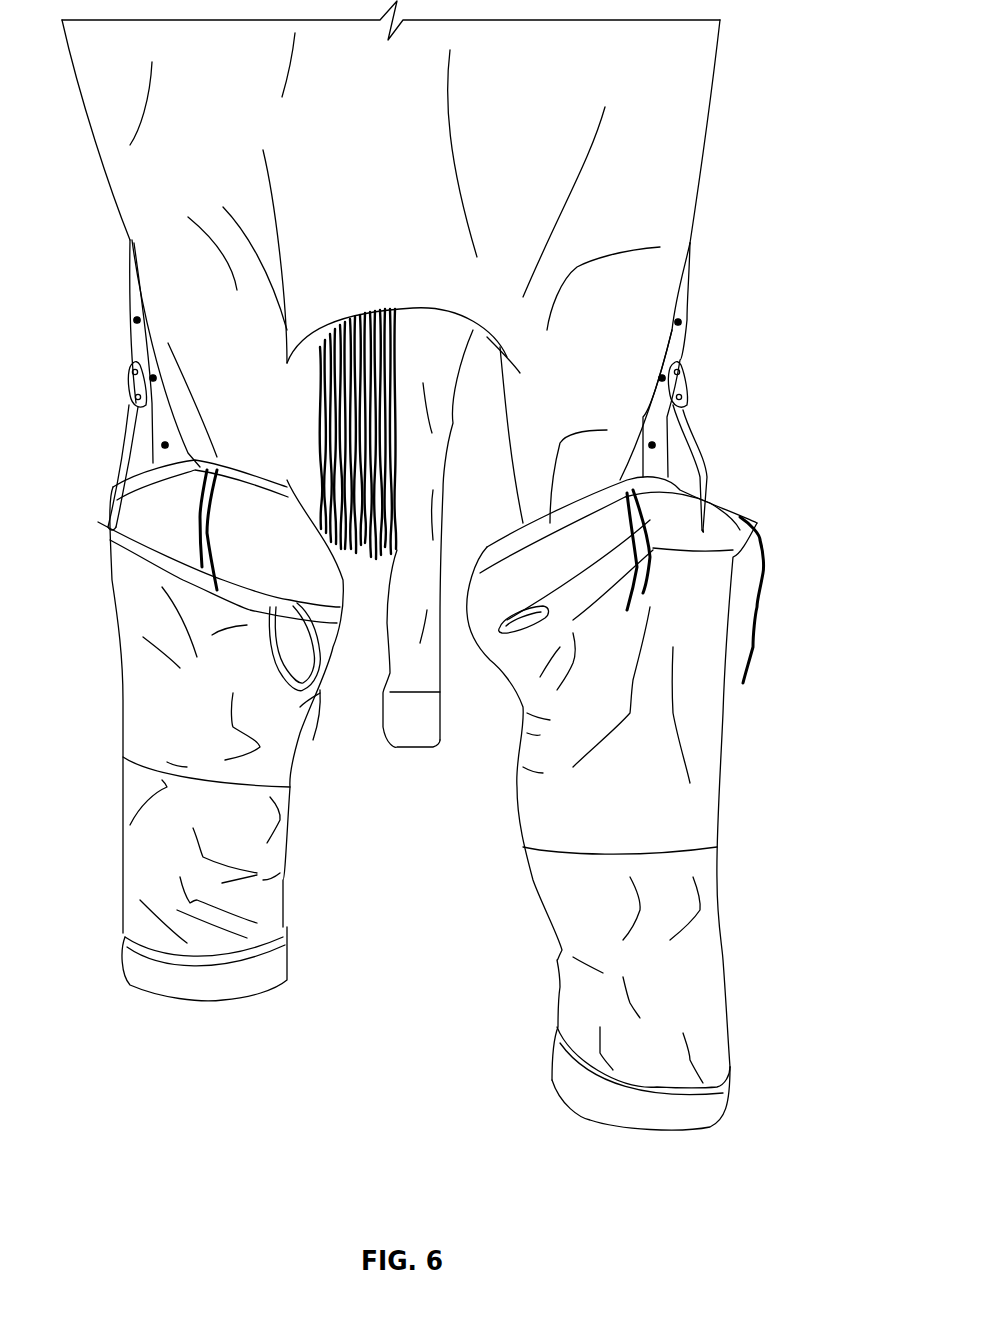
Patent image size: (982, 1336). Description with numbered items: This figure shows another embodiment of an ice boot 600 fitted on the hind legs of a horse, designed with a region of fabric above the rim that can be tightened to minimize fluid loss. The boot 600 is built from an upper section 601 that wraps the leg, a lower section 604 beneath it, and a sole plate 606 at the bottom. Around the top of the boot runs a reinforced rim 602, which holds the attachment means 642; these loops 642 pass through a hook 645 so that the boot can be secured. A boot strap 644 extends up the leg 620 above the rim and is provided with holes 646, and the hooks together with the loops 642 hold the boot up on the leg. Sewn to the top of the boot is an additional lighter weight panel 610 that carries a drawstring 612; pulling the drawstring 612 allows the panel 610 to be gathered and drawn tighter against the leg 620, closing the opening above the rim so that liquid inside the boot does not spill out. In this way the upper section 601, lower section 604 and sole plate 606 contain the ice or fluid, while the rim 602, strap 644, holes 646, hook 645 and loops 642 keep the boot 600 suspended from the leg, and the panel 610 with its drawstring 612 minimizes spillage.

The boot 600 is at (440, 702).
The upper section 601 is at (700, 752).
The rim 602 is at (747, 530).
The lower section 604 is at (190, 883).
The sole plate 606 is at (633, 1110).
The lighter weight panel 610 is at (303, 563).
The drawstring 612 is at (130, 547).
The horse leg 620 is at (630, 283).
The attachment means 642 is at (117, 465).
The boot strap 644 is at (98, 522).
The hook 645 is at (130, 381).
The holes 646 is at (134, 320).